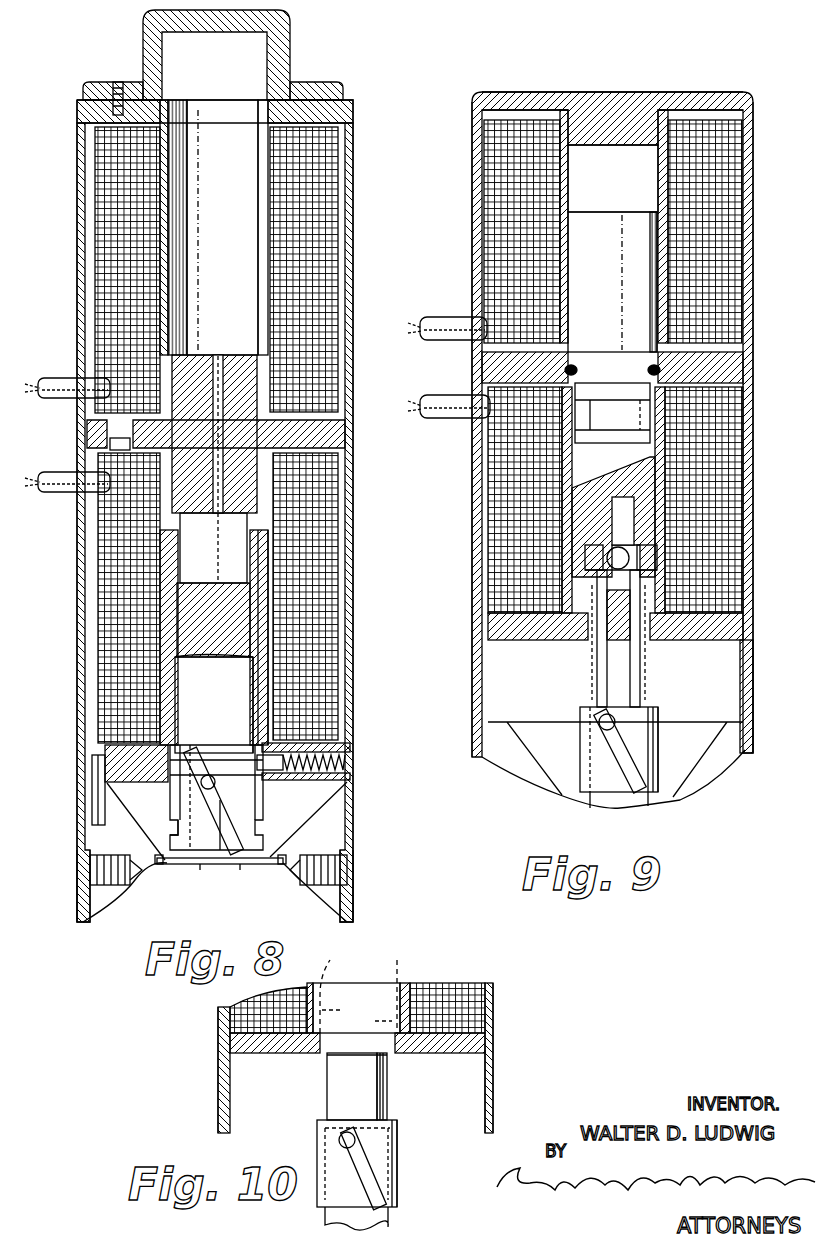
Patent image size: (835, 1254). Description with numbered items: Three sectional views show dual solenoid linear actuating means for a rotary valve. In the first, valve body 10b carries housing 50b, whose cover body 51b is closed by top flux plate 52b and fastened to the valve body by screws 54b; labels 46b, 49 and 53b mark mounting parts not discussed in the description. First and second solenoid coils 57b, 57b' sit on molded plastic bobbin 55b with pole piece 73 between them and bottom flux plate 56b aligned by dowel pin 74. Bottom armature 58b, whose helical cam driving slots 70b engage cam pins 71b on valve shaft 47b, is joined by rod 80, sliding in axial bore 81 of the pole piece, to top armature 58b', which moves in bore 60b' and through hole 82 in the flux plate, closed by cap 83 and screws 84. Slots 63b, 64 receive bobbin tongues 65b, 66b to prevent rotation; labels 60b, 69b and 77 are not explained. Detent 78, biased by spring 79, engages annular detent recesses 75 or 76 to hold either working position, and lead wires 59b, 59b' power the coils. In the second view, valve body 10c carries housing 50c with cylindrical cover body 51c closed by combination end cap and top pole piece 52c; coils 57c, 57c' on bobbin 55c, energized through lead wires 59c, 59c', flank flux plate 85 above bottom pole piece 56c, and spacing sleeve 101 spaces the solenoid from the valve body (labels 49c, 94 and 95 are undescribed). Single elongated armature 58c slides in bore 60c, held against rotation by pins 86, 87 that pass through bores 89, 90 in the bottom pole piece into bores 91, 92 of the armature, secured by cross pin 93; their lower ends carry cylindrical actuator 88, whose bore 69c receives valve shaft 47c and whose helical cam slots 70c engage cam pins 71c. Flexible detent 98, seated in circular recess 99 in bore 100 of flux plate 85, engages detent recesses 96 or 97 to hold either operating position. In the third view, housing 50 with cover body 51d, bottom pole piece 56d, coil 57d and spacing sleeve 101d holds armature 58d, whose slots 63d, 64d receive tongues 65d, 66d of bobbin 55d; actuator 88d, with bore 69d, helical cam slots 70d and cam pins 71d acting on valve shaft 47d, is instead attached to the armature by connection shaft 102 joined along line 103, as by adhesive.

In FIG. 8, the valve body 10b is at (95, 928).
In FIG. 8, the bottom plate 46b is at (165, 865).
In FIG. 8, the valve shaft 47b is at (230, 860).
In FIG. 8, the bracket 49 is at (300, 820).
In FIG. 8, the solenoid housing 50b is at (353, 230).
In FIG. 8, the cover body 51b is at (353, 180).
In FIG. 8, the top flux plate 52b is at (315, 108).
In FIG. 8, the casing skirt 53b is at (80, 832).
In FIG. 8, the screws 54b is at (88, 868).
In FIG. 8, the bobbin 55b is at (258, 318).
In FIG. 8, the bottom flux plate 56b is at (100, 765).
In FIG. 8, the first solenoid coil 57b is at (251, 598).
In FIG. 8, the second solenoid coil 57b' is at (250, 268).
In FIG. 8, the bottom armature 58b is at (136, 705).
In FIG. 8, the top armature 58b' is at (108, 227).
In FIG. 8, the lead wires 59b is at (67, 459).
In FIG. 8, the lead wires 59b' is at (67, 367).
In FIG. 8, the sleeve 60b is at (334, 626).
In FIG. 8, the bore 60b' is at (337, 213).
In FIG. 8, the slot 63b is at (245, 668).
In FIG. 8, the slot 64 is at (185, 660).
In FIG. 8, the tongue 65b is at (262, 543).
In FIG. 8, the tongue 66b is at (165, 540).
In FIG. 8, the plunger 69b is at (185, 795).
In FIG. 8, the helical cam driving slots 70b is at (222, 818).
In FIG. 8, the cam pins 71b is at (213, 778).
In FIG. 8, the pole piece 73 is at (330, 435).
In FIG. 8, the dowel pin 74 is at (92, 800).
In FIG. 8, the detent recess 75 is at (190, 750).
In FIG. 8, the detent recess 76 is at (176, 830).
In FIG. 8, the spring 77 is at (345, 758).
In FIG. 8, the detent 78 is at (290, 745).
In FIG. 8, the spring 79 is at (300, 770).
In FIG. 8, the rod 80 is at (213, 545).
In FIG. 8, the axial bore 81 is at (218, 358).
In FIG. 8, the axial hole 82 is at (165, 100).
In FIG. 8, the cap 83 is at (152, 30).
In FIG. 8, the screws 84 is at (118, 82).
In FIG. 9, the valve body 10c is at (525, 770).
In FIG. 9, the valve element shaft 47c is at (628, 805).
In FIG. 9, the bracket 49c is at (715, 745).
In FIG. 9, the solenoid housing 50c is at (753, 285).
In FIG. 9, the cylindrical cover body 51c is at (753, 238).
In FIG. 9, the combination end cap and top pole piece 52c is at (594, 102).
In FIG. 9, the bobbin 55c is at (656, 175).
In FIG. 9, the bottom pole piece 56c is at (752, 626).
In FIG. 9, the solenoid coil 57c is at (647, 500).
In FIG. 9, the solenoid coil 57c' is at (647, 231).
In FIG. 9, the armature 58c is at (640, 412).
In FIG. 9, the lead wires 59c is at (449, 431).
In FIG. 9, the lead wires 59c' is at (447, 296).
In FIG. 9, the bore 60c is at (665, 190).
In FIG. 9, the bore 69c is at (678, 792).
In FIG. 9, the helical cam slots 70c is at (625, 752).
In FIG. 9, the cam pins 71c is at (615, 720).
In FIG. 9, the flux plate 85 is at (753, 364).
In FIG. 9, the pin 86 is at (592, 670).
In FIG. 9, the pin 87 is at (645, 681).
In FIG. 9, the cylindrical actuator 88 is at (582, 742).
In FIG. 9, the bore 89 is at (594, 645).
In FIG. 9, the bore 90 is at (642, 640).
In FIG. 9, the bore 91 is at (588, 578).
In FIG. 9, the bore 92 is at (655, 560).
In FIG. 9, the cross pin 93 is at (605, 500).
In FIG. 9, the bracket 94 is at (588, 556).
In FIG. 9, the roller 95 is at (618, 546).
In FIG. 9, the detent recess 96 is at (636, 348).
In FIG. 9, the detent recess 97 is at (590, 437).
In FIG. 9, the detent 98 is at (650, 366).
In FIG. 9, the circular recess 99 is at (648, 430).
In FIG. 9, the bore 100 is at (578, 366).
In FIG. 9, the spacing sleeve 101 is at (752, 676).
In FIG. 10, the rotary valve element shaft 47d is at (380, 1215).
In FIG. 10, the solenoid housing 50 is at (493, 1068).
In FIG. 10, the cover body 51d is at (493, 1022).
In FIG. 10, the bobbin 55d is at (405, 990).
In FIG. 10, the bottom pole piece 56d is at (260, 1053).
In FIG. 10, the solenoid coil 57d is at (455, 1000).
In FIG. 10, the armature 58d is at (365, 990).
In FIG. 10, the slot 63d is at (413, 987).
In FIG. 10, the slot 64d is at (334, 983).
In FIG. 10, the tongue 65d is at (364, 1024).
In FIG. 10, the tongue 66d is at (347, 1010).
In FIG. 10, the bore 69d is at (398, 1135).
In FIG. 10, the helical cam slots 70d is at (365, 1190).
In FIG. 10, the cam pins 71d is at (338, 1140).
In FIG. 10, the actuator 88d is at (398, 1158).
In FIG. 10, the spacing sleeve 101d is at (485, 1100).
In FIG. 10, the connection shaft 102 is at (382, 1092).
In FIG. 10, the line 103 is at (340, 1058).